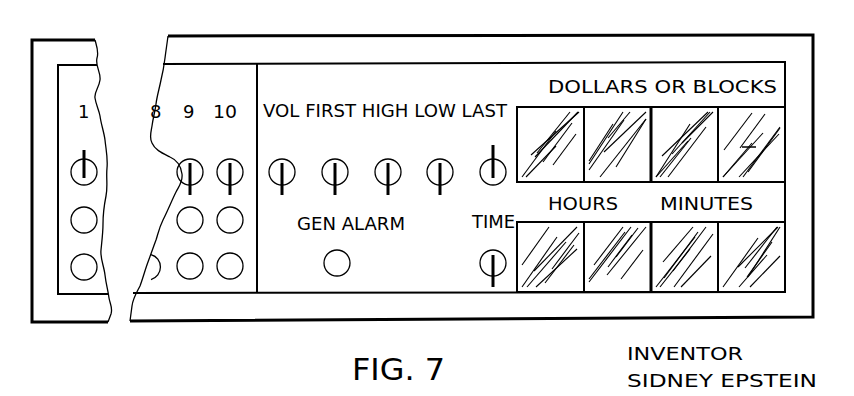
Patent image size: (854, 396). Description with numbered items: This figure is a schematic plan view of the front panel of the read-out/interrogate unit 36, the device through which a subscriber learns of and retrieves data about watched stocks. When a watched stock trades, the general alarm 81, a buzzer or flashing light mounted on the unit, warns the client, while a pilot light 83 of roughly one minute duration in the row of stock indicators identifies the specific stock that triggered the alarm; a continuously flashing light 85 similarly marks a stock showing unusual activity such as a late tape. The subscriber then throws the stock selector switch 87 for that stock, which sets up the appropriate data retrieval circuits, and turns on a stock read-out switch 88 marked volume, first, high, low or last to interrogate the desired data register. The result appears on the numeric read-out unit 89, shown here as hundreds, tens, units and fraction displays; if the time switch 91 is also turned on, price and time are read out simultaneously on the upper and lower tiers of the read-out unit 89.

The read-out/interrogate unit 36 is at (166, 48).
The general alarm 81 is at (323, 263).
The pilot light 83 is at (199, 211).
The continuously flashing light 85 is at (199, 257).
The stock selector switch 87 is at (226, 160).
The stock read-out switch 88 is at (290, 160).
The numeric read-out unit 89 is at (528, 107).
The time switch 91 is at (480, 262).